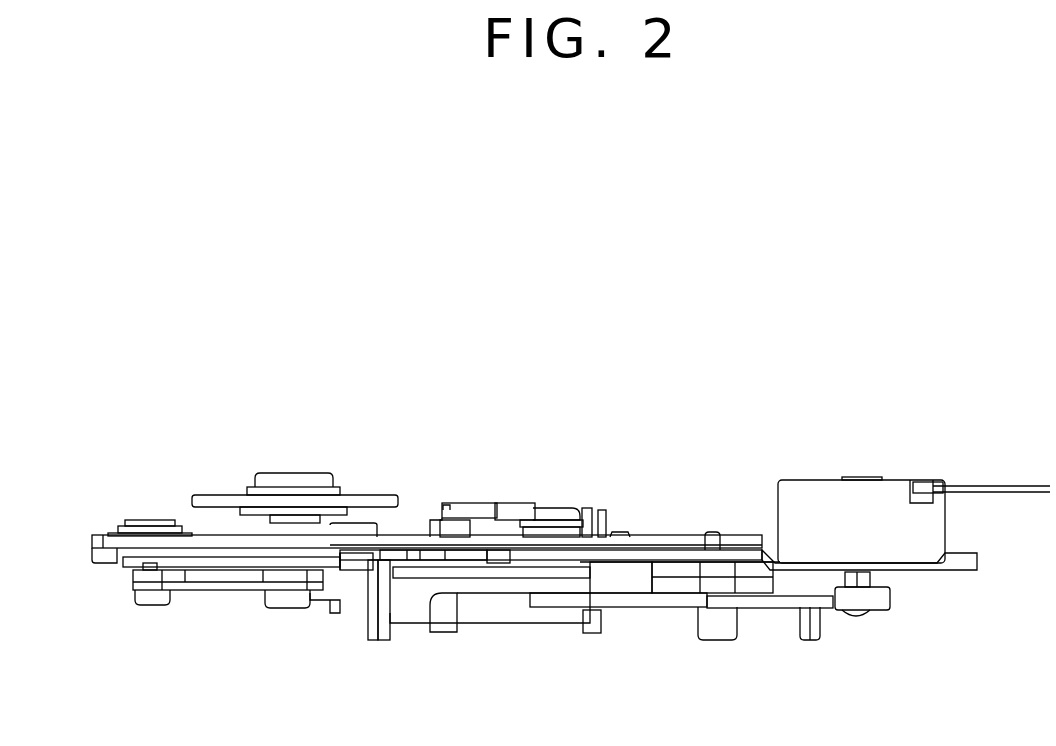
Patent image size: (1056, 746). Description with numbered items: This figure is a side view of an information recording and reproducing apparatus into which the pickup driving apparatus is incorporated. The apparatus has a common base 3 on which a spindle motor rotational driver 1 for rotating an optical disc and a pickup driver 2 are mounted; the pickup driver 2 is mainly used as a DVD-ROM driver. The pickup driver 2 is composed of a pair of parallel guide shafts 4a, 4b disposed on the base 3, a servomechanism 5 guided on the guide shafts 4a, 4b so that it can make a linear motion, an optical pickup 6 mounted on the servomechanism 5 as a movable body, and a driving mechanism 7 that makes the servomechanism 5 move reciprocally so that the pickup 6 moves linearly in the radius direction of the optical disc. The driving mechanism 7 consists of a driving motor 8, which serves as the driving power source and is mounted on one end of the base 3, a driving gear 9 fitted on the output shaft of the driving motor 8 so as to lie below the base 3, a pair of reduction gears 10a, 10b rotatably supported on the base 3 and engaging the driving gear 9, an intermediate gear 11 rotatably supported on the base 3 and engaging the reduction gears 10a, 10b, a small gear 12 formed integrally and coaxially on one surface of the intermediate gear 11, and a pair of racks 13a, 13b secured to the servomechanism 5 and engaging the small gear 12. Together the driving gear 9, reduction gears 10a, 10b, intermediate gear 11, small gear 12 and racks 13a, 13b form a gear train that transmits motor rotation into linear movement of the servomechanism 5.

The spindle motor rotational driver 1 is at (308, 462).
The pickup driver 2 is at (660, 524).
The common base 3 is at (685, 552).
The guide shaft 4a is at (400, 590).
The guide shaft 4b is at (384, 600).
The servomechanism 5 is at (517, 610).
The optical pickup 6 is at (517, 510).
The driving mechanism 7 is at (752, 620).
The driving motor 8 is at (843, 502).
The driving gear 9 is at (890, 603).
The reduction gear 10a is at (788, 608).
The reduction gear 10b is at (832, 612).
The intermediate gear 11 is at (657, 600).
The small gear 12 is at (612, 566).
The rack 13a is at (425, 570).
The rack 13b is at (497, 565).